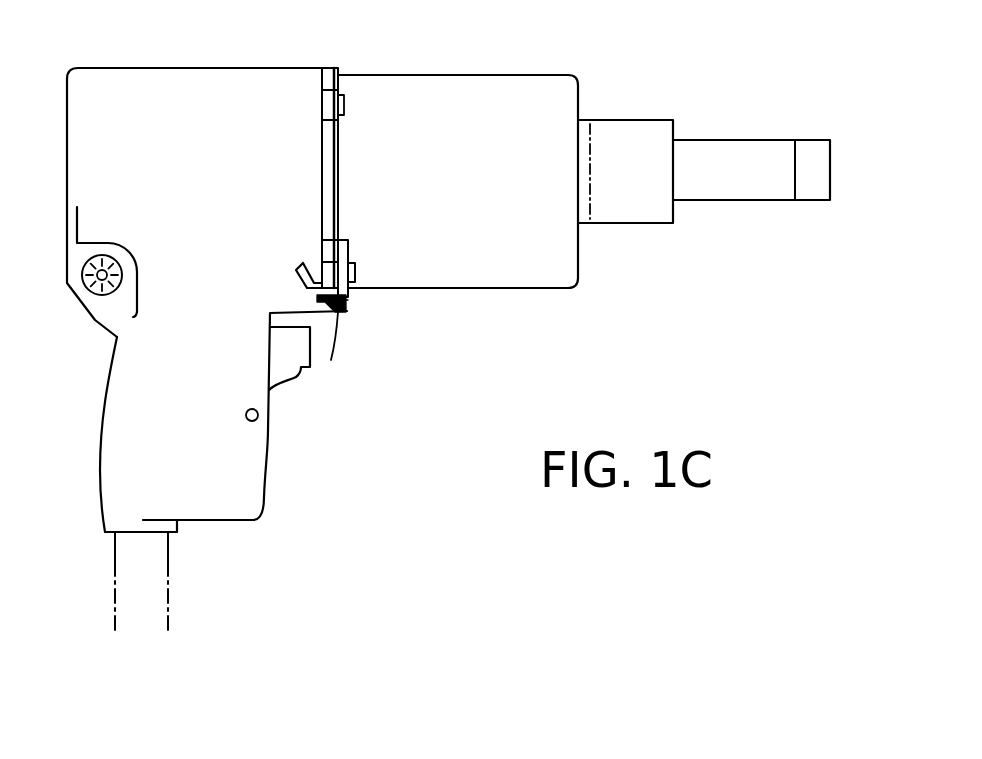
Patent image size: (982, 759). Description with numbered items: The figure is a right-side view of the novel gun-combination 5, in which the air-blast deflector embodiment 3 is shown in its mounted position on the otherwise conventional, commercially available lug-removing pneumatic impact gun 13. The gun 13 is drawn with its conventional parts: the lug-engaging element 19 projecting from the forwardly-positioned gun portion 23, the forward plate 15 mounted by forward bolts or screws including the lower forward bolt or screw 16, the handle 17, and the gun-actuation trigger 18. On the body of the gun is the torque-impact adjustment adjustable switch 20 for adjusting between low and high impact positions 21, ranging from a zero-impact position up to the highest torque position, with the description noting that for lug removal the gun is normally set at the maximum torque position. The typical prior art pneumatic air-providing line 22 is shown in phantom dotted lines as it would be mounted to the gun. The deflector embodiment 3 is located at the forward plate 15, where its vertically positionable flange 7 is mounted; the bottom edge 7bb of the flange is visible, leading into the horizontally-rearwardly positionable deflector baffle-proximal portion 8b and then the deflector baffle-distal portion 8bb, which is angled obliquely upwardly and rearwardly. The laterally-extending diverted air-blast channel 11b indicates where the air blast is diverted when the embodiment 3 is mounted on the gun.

The gun-combination 5 is at (660, 76).
The lug-removing pneumatic impact gun 13 is at (232, 68).
The forward plate 15 is at (337, 165).
The lower forward bolt/screw 16 is at (355, 272).
The handle 17 is at (248, 483).
The gun-actuation trigger 18 is at (300, 372).
The lug-engaging element 19 is at (808, 155).
The torque-impact adjustment adjustable switch 20 is at (97, 292).
The impact positions 21 is at (128, 208).
The pneumatic air-providing line 22 is at (150, 606).
The forwardly-positioned gun portion 23 is at (547, 273).
The vertically positionable flange 7 is at (344, 250).
The bottom edge of the flange 7bb is at (350, 297).
The deflector baffle-proximal portion 8b is at (338, 361).
The deflector baffle-distal portion 8bb is at (294, 283).
The diverted air-blast channel 11b is at (318, 280).
The embodiment 3 is at (366, 327).